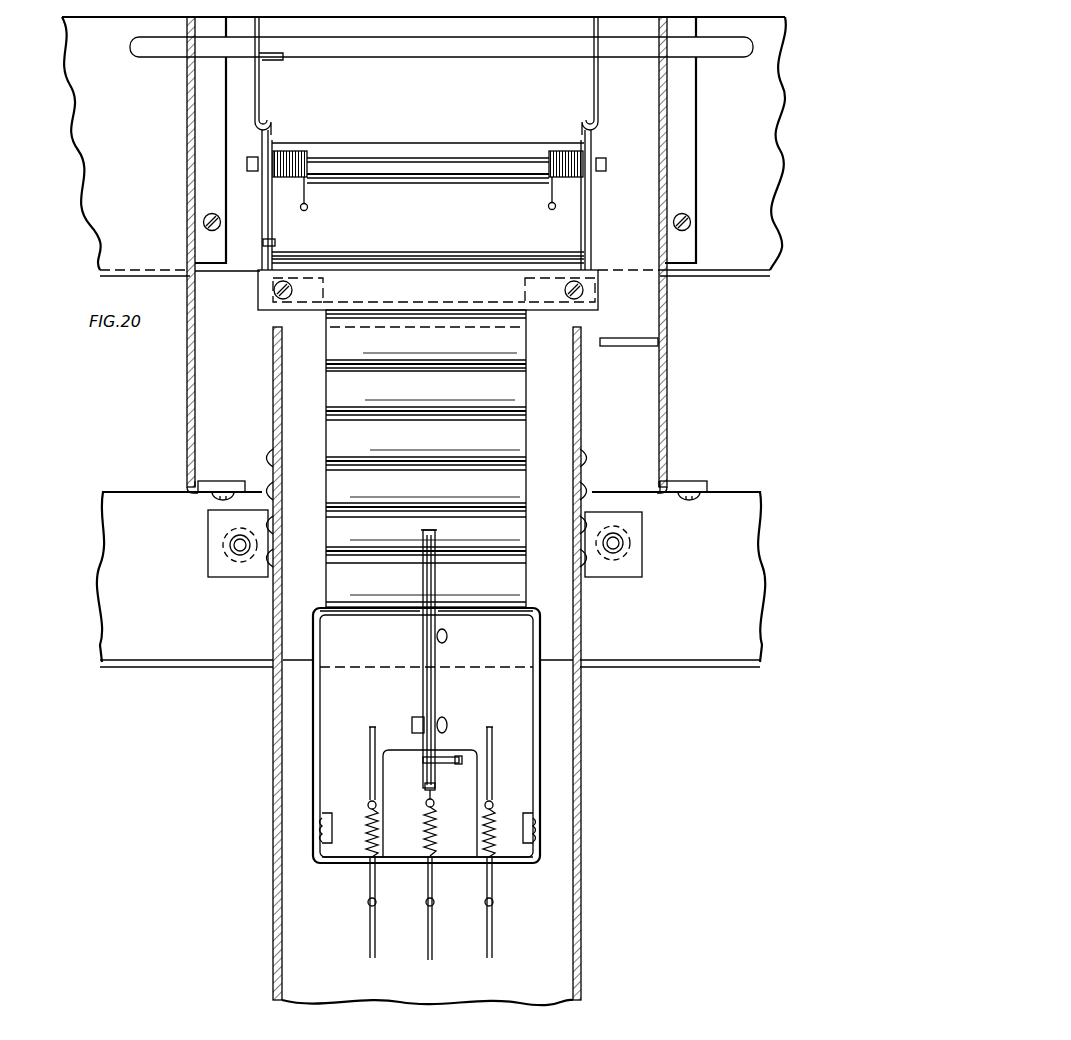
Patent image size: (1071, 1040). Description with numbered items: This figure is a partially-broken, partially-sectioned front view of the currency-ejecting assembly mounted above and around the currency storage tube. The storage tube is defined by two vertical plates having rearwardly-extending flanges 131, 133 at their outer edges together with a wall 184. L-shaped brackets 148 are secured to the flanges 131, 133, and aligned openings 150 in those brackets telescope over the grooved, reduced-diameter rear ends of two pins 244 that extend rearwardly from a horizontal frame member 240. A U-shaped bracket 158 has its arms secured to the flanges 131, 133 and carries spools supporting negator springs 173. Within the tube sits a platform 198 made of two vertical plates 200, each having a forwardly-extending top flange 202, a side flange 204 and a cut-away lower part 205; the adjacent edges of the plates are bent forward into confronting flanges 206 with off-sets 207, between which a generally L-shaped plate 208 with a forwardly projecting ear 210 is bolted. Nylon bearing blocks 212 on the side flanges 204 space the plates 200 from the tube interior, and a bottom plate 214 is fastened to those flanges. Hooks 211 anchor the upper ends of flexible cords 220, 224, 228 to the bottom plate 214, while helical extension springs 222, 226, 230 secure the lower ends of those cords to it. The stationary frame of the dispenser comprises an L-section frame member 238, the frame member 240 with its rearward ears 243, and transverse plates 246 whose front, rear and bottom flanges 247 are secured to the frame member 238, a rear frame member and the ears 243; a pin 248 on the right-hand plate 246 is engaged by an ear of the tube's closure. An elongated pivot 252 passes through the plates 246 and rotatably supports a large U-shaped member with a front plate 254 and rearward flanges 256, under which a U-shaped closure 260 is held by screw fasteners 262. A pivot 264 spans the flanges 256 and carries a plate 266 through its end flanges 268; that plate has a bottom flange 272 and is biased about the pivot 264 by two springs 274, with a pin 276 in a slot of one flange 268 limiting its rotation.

The rearwardly-extending flange 131 is at (274, 938).
The rearwardly-extending flange 133 is at (582, 966).
The bracket 148 is at (634, 580).
The opening 150 is at (625, 548).
The U-shaped bracket 158 is at (586, 455).
The negator spring 173 is at (436, 580).
The wall 184 is at (565, 920).
The platform 198 is at (560, 708).
The vertically directed plate 200 is at (525, 740).
The top flange 202 is at (493, 614).
The side flange 204 is at (318, 730).
The cut-away portion 205 is at (462, 752).
The flange 206 is at (440, 682).
The off-set 207 is at (438, 770).
The L-shaped plate 208 is at (434, 791).
The ear 210 is at (463, 761).
The hook 211 is at (493, 888).
The bearing block 212 is at (567, 794).
The bottom plate 214 is at (347, 866).
The flexible cord 220 is at (369, 939).
The helical extension spring 222 is at (369, 812).
The flexible cord 224 is at (493, 938).
The helical extension spring 226 is at (494, 814).
The flexible cord 228 is at (428, 948).
The helical extension spring 230 is at (437, 832).
The frame member 238 is at (770, 268).
The frame member 240 is at (727, 652).
The ear 243 is at (706, 482).
The pin 244 is at (622, 553).
The plate 246 is at (668, 440).
The flange 247 is at (208, 493).
The pin 248 is at (640, 346).
The pivot 252 is at (470, 52).
The front plate 254 is at (471, 143).
The flange 256 is at (599, 103).
The U-shaped closure 260 is at (594, 302).
The fastener 262 is at (593, 289).
The pivot 264 is at (425, 178).
The plate 266 is at (492, 221).
The flange 268 is at (586, 212).
The bottom flange 272 is at (370, 258).
The spring 274 is at (557, 151).
The pin 276 is at (277, 242).